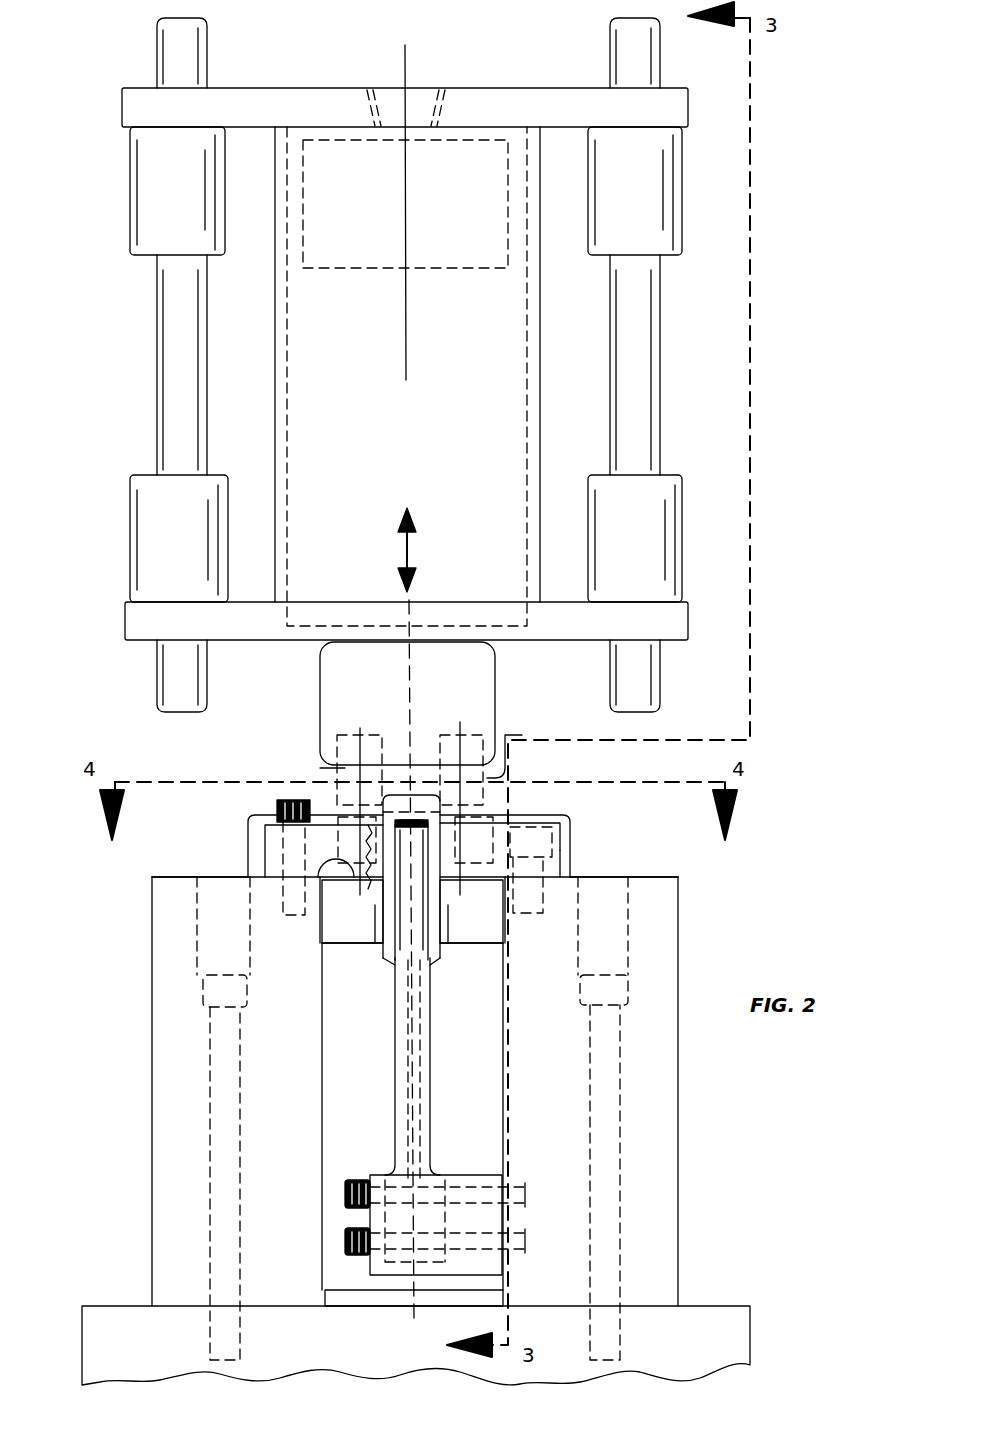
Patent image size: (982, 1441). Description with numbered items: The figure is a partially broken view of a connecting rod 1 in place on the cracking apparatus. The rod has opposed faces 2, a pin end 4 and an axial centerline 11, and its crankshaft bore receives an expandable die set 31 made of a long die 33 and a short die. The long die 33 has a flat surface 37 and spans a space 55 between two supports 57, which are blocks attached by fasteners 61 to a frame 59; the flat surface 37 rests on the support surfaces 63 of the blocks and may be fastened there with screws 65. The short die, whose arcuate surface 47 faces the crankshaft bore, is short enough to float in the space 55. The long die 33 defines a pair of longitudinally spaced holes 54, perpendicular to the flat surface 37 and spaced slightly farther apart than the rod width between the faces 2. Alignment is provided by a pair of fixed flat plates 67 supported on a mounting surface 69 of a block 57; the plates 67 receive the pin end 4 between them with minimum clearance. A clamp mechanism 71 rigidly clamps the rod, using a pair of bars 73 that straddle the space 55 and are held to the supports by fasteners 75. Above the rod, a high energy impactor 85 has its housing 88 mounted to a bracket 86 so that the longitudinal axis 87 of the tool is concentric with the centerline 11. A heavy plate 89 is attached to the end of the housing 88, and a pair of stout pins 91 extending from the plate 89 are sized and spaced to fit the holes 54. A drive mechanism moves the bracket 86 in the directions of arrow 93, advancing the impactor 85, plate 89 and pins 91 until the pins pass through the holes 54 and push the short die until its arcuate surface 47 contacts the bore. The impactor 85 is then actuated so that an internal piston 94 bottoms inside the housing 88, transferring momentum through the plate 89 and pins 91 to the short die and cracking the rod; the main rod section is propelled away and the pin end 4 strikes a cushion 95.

The connecting rod 1 is at (385, 1050).
The opposed faces 2 is at (368, 945).
The pin end 4 is at (478, 1175).
The axial centerline 11 is at (418, 995).
The expandable die set 31 is at (580, 858).
The long die 33 is at (580, 830).
The flat surface 37 is at (540, 915).
The arcuate surface 47 is at (318, 882).
The holes 54 is at (355, 830).
The space 55 is at (370, 1128).
The supports 57 is at (152, 1118).
The frame 59 is at (722, 1308).
The fasteners 61 is at (200, 965).
The support surfaces 63 is at (160, 877).
The screws 65 is at (548, 816).
The fixed flat plates 67 is at (387, 1175).
The mounting surface 69 is at (503, 1027).
The clamp mechanism 71 is at (250, 852).
The bars 73 is at (266, 830).
The fasteners 75 is at (278, 808).
The high energy impactor 85 is at (368, 440).
The bracket 86 is at (130, 622).
The longitudinal axis 87 is at (420, 365).
The housing 88 is at (510, 320).
The heavy plate 89 is at (483, 688).
The pins 91 is at (345, 776).
The arrow 93 is at (412, 550).
The internal piston 94 is at (378, 270).
The cushion 95 is at (330, 1292).